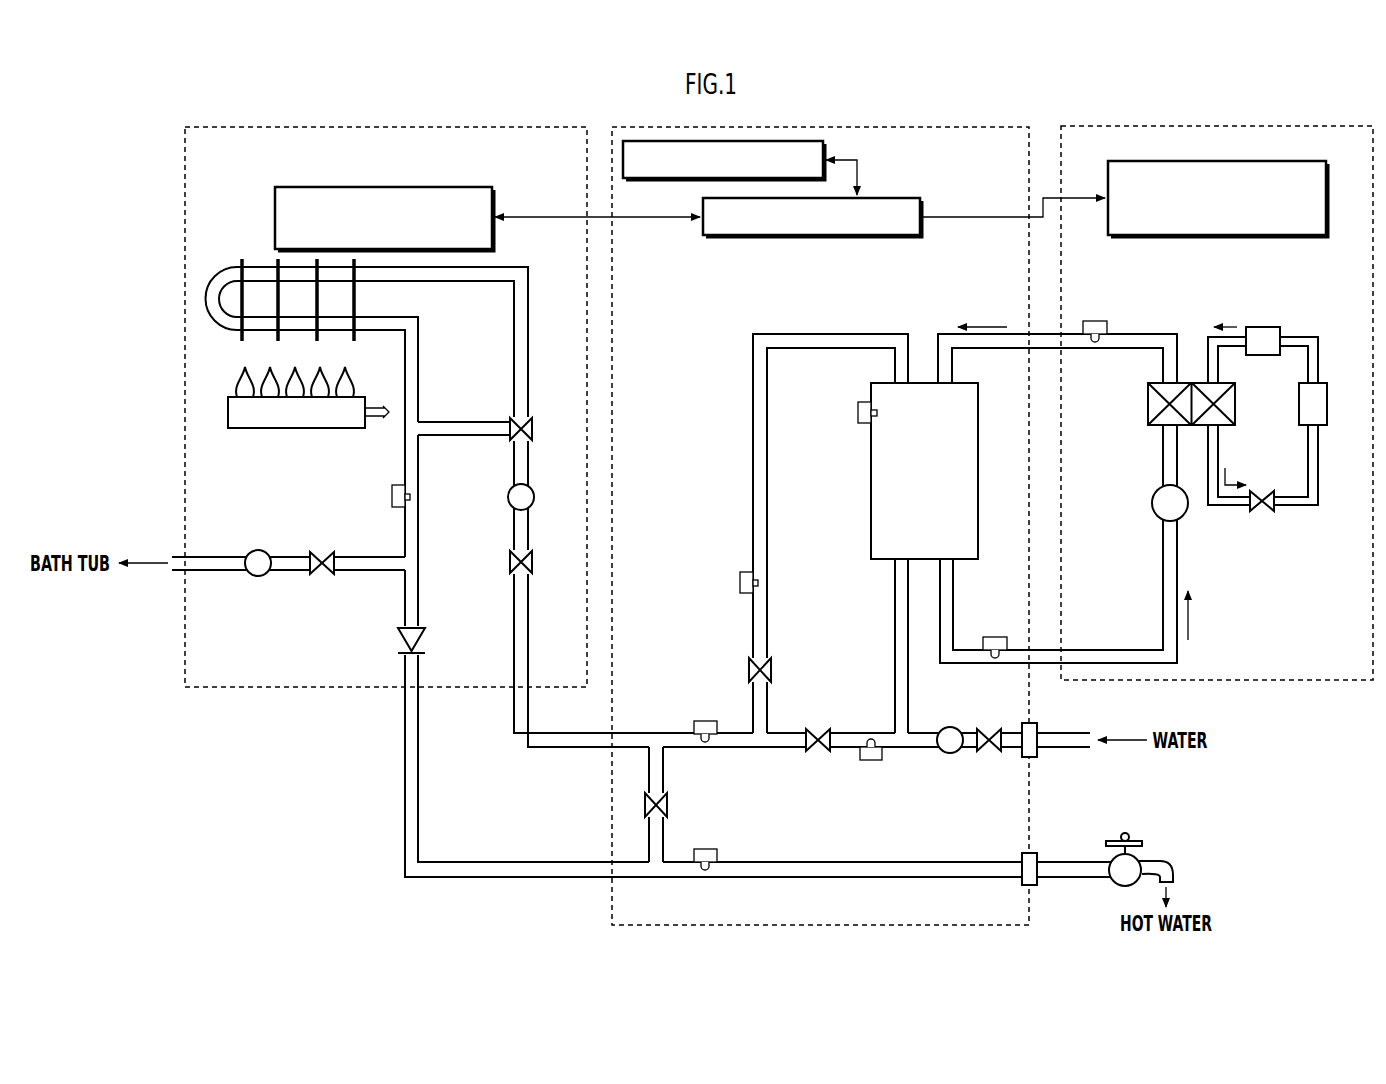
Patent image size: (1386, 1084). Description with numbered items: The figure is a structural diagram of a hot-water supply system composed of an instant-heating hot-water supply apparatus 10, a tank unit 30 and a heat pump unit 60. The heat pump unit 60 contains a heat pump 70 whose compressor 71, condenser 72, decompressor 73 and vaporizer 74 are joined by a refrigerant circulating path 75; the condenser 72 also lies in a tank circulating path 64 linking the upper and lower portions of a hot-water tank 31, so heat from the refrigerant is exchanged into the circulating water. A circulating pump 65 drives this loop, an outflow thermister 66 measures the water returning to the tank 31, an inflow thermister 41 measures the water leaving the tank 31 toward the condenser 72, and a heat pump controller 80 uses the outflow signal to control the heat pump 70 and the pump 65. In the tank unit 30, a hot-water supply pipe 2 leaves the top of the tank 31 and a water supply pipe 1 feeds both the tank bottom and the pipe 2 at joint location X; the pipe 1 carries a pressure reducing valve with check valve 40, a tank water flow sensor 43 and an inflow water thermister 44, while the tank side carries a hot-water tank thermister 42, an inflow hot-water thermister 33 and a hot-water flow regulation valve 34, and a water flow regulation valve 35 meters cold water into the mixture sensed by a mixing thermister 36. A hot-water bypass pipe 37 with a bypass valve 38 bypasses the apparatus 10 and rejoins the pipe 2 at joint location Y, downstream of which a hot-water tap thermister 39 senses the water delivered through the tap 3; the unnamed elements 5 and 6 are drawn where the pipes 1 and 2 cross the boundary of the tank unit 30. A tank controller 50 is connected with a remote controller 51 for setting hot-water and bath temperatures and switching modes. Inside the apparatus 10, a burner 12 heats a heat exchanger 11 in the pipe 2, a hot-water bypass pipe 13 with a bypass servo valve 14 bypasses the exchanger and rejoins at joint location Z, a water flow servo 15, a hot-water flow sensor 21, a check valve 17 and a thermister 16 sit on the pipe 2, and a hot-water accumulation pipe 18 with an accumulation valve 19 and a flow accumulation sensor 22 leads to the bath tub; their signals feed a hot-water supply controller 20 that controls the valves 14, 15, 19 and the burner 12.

The water supply pipe 1 is at (925, 748).
The hot-water supply pipe 2 is at (548, 749).
The hot water tap 3 is at (1158, 859).
The connection member 5 is at (1033, 758).
The connection member 6 is at (1033, 886).
The hot-water supply apparatus 10 is at (455, 126).
The heat exchanger 11 is at (241, 259).
The burner 12 is at (297, 429).
The hot-water bypass pipe 13 is at (462, 421).
The bypass servo valve 14 is at (533, 429).
The water flow servo 15 is at (533, 563).
The thermister 16 is at (390, 495).
The check valve 17 is at (426, 640).
The hot-water accumulation pipe 18 is at (373, 572).
The hot-water accumulation valve 19 is at (318, 578).
The hot-water supply controller 20 is at (462, 187).
The hot-water flow sensor 21 is at (535, 497).
The hot-water flow accumulation sensor 22 is at (258, 576).
The tank unit 30 is at (883, 126).
The hot-water tank 31 is at (870, 459).
The inflow hot-water thermister 33 is at (740, 581).
The hot-water flow regulation valve 34 is at (773, 671).
The water flow regulation valve 35 is at (820, 728).
The mixing thermister 36 is at (705, 720).
The hot-water bypass pipe 37 is at (664, 764).
The bypass valve 38 is at (668, 803).
The hot-water tap thermister 39 is at (706, 848).
The pressure reducing valve with a check valve 40 is at (988, 727).
The inflow thermister 41 is at (995, 636).
The hot-water tank thermister 42 is at (858, 412).
The tank water flow sensor 43 is at (953, 727).
The inflow water thermister 44 is at (871, 762).
The tank controller 50 is at (882, 198).
The remote controller 51 is at (635, 179).
The heat pump unit 60 is at (1285, 126).
The tank circulating path 64 is at (1145, 333).
The circulating pump 65 is at (1188, 512).
The outflow thermister 66 is at (1093, 320).
The heat pump 70 is at (1256, 404).
The compressor 71 is at (1262, 326).
The condenser 72 is at (1236, 405).
The decompressor 73 is at (1257, 512).
The vaporizer 74 is at (1328, 405).
The refrigerant circulating path 75 is at (1308, 507).
The heat pump controller 80 is at (1285, 161).
The joint location X is at (762, 748).
The joint location Y is at (657, 877).
The joint location Z is at (419, 433).